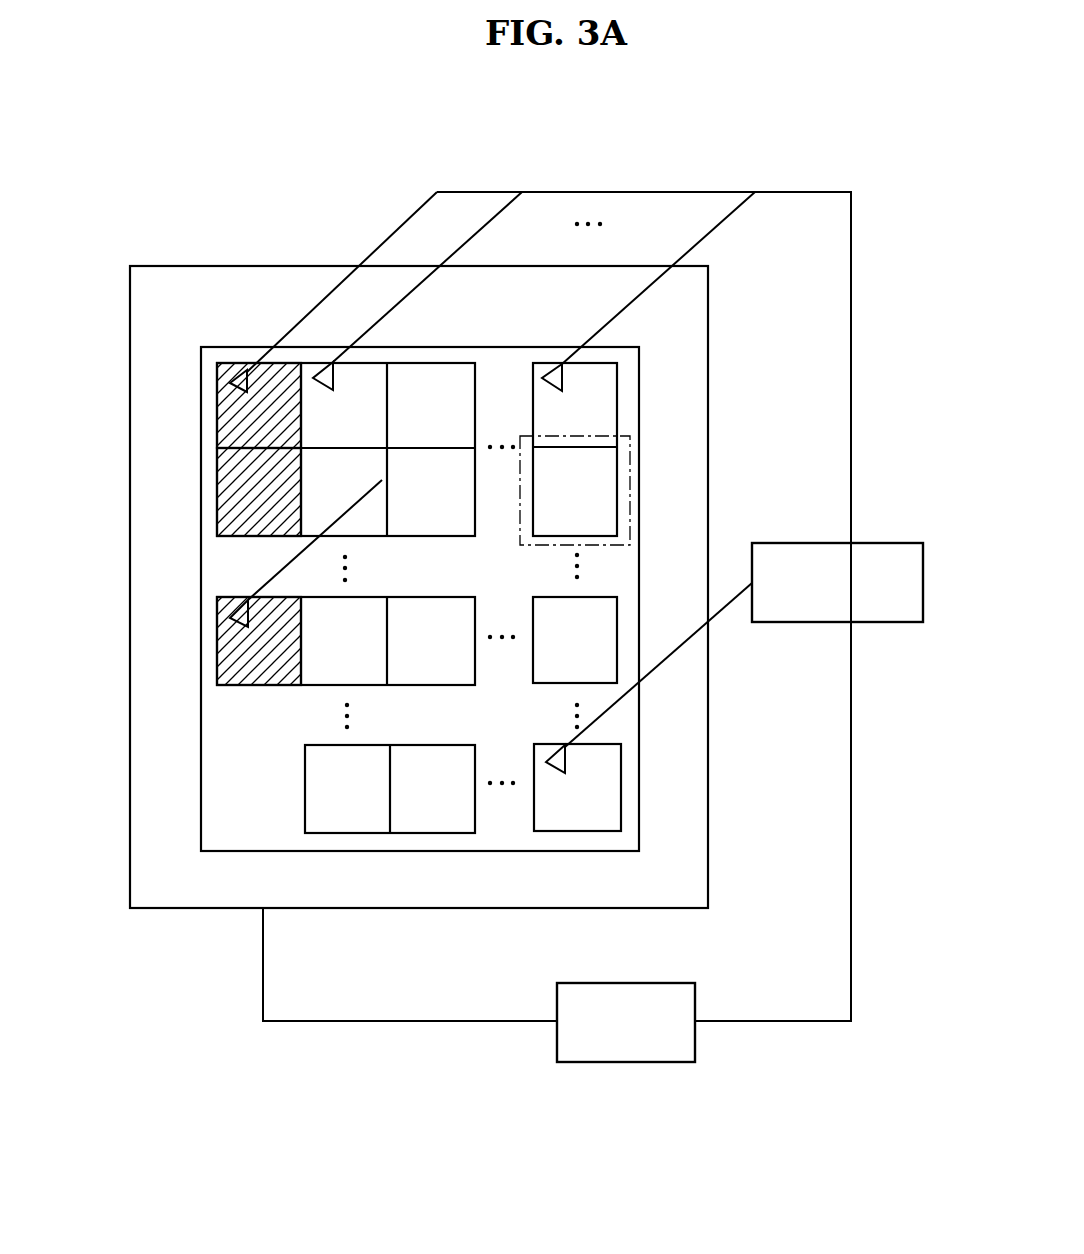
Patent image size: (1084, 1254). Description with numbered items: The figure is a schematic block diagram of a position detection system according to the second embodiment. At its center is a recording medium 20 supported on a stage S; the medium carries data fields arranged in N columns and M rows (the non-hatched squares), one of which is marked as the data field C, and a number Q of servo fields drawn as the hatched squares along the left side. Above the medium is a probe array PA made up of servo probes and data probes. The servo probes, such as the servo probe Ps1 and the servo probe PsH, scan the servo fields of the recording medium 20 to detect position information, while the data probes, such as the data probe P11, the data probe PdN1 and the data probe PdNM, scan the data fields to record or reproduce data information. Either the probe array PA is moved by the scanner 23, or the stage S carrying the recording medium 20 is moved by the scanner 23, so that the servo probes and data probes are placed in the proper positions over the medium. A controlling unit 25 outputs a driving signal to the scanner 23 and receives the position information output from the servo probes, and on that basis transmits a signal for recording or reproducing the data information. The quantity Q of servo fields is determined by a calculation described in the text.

The recording medium 20 is at (213, 795).
The scanner 23 is at (652, 982).
The controlling unit 25 is at (880, 543).
The stage S is at (152, 868).
The data field C is at (630, 457).
The probe array PA is at (767, 175).
The number of data field columns N is at (615, 333).
The number of servo fields Q is at (190, 685).
The number of data field rows M is at (650, 363).
The servo probe Ps1 is at (410, 225).
The data probe P11 is at (487, 228).
The data probe PdN1 is at (727, 218).
The servo probe PsH is at (282, 568).
The data probe PdNM is at (678, 645).